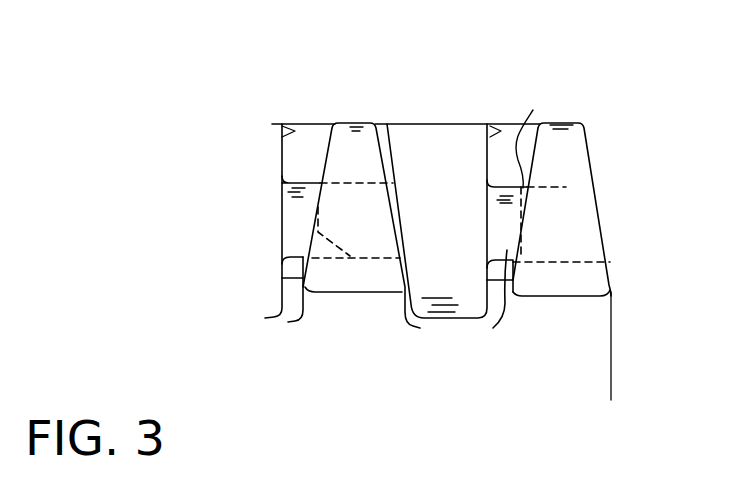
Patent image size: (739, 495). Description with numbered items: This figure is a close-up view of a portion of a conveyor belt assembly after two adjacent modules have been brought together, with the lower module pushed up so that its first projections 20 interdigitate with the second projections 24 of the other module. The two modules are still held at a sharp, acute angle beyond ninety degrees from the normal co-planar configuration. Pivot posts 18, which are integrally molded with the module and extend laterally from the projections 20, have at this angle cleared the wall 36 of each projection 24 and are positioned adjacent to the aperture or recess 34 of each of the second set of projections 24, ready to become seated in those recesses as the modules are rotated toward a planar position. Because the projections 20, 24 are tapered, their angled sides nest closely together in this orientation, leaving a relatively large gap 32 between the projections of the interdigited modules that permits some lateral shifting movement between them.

The pivot post 18 is at (323, 124).
The first projections 20 is at (475, 313).
The second projections 24 is at (328, 270).
The gap 32 is at (508, 143).
The recess 34 is at (318, 207).
The wall 36 is at (533, 110).